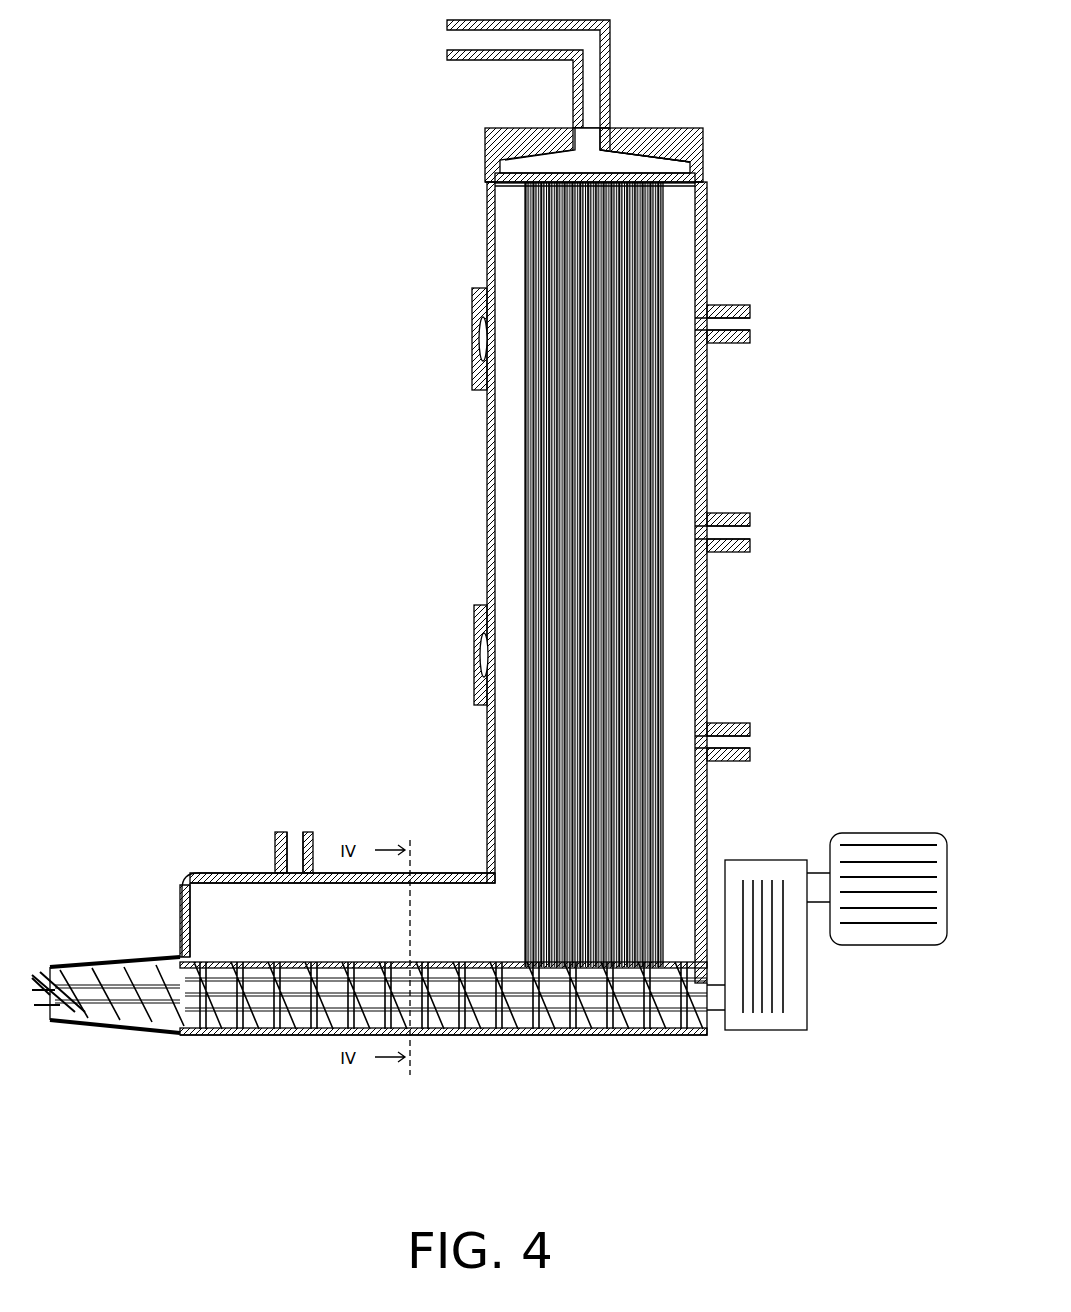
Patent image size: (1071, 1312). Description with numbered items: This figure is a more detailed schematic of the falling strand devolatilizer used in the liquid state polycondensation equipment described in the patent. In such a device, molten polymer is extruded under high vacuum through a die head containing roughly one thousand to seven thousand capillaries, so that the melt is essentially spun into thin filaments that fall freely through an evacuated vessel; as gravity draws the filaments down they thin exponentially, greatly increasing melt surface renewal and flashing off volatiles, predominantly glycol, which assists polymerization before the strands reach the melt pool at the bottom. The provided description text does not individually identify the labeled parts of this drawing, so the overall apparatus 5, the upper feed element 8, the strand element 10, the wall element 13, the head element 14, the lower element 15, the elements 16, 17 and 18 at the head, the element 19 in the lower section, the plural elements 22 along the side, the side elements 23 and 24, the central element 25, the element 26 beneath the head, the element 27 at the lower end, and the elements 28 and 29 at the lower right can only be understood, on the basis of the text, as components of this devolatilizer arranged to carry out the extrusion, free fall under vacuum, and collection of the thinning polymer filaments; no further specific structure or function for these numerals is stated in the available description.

The filtration module 5 is at (393, 478).
The inlet pipe 8 is at (593, 73).
The hollow fiber strands 10 is at (97, 968).
The housing wall 13 is at (705, 428).
The cap 14 is at (505, 148).
The lower housing 15 is at (463, 875).
The seal 16 is at (700, 196).
The cap top wall 17 is at (690, 142).
The inlet channel 18 is at (578, 122).
The support lattice 19 is at (500, 960).
The port 22 is at (730, 325).
The upper fitting 23 is at (490, 338).
The lower fitting 24 is at (478, 658).
The fiber bundle 25 is at (672, 627).
The potting plate 26 is at (525, 185).
The fiber bundle end 27 is at (290, 1015).
The motor 28 is at (881, 925).
The pump 29 is at (650, 990).